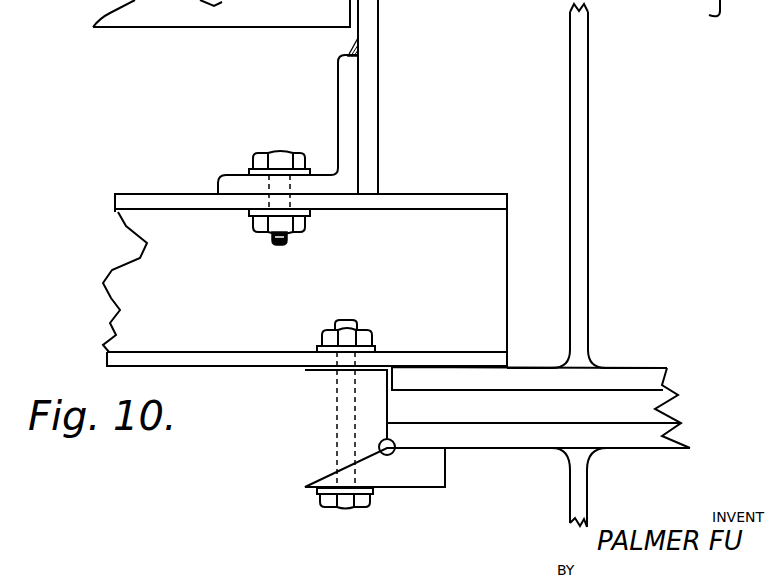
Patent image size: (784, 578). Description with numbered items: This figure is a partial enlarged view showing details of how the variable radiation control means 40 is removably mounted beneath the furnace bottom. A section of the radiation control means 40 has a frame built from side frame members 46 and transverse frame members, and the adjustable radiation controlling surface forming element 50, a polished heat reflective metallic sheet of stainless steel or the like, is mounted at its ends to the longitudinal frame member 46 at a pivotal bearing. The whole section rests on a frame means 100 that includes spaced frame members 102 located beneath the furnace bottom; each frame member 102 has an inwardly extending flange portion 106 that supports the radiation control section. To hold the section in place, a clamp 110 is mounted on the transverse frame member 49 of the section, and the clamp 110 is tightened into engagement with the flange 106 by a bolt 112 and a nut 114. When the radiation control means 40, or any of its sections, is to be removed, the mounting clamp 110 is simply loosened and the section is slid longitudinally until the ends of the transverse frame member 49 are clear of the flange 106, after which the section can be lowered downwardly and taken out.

The variable radiation control means 40 is at (409, 198).
The side frame member 46 is at (368, 58).
The transverse frame member 49 is at (243, 330).
The radiation controlling surface forming element 50 is at (212, 15).
The frame means 100 is at (588, 153).
The frame member 102 is at (578, 500).
The flange portion 106 is at (502, 435).
The clamp 110 is at (408, 470).
The bolt 112 is at (345, 508).
The nut 114 is at (360, 333).